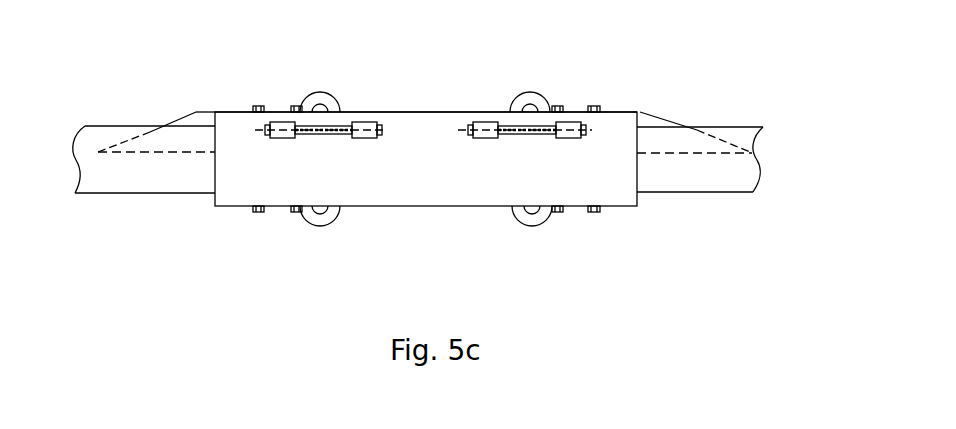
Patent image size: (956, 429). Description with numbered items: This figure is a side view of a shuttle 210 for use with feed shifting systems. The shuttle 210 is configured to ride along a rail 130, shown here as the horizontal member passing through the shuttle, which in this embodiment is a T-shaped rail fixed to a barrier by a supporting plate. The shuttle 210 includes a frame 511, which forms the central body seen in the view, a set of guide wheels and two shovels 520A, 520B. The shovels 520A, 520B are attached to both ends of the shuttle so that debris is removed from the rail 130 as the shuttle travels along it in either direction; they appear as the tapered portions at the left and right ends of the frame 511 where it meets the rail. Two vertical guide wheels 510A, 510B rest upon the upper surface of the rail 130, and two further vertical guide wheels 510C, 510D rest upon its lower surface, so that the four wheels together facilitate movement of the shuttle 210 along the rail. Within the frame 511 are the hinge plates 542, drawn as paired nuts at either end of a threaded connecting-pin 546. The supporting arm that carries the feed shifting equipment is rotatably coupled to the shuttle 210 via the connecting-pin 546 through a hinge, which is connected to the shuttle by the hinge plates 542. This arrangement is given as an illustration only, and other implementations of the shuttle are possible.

The rail 130 is at (177, 195).
The shuttle 210 is at (618, 206).
The frame 511 is at (617, 120).
The shovel 520A is at (200, 118).
The shovel 520B is at (652, 118).
The vertical guide wheel 510A is at (340, 111).
The vertical guide wheel 510B is at (513, 111).
The vertical guide wheel 510C is at (343, 222).
The vertical guide wheel 510D is at (513, 220).
The hinge plate 542 is at (283, 138).
The connecting-pin 546 is at (508, 121).